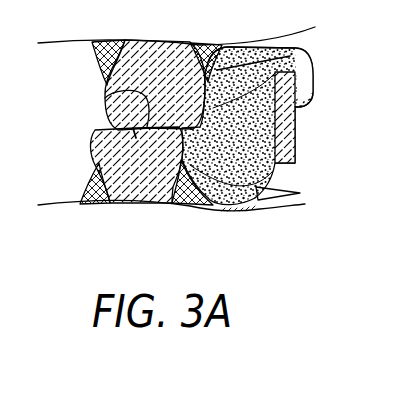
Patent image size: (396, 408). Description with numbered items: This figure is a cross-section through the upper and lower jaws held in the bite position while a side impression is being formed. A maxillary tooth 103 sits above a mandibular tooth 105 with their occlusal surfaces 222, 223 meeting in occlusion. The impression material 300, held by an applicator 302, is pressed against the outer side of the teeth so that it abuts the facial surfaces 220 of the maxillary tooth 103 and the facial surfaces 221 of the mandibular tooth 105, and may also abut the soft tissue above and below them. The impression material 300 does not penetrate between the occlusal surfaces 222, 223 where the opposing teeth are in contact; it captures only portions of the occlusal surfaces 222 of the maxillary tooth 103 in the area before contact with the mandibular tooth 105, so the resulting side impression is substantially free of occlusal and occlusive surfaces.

The maxillary tooth 103 is at (100, 66).
The mandibular tooth 105 is at (92, 182).
The facial surfaces 220 is at (300, 59).
The facial surfaces 221 is at (298, 193).
The occlusal surfaces 222 is at (103, 155).
The occlusal surfaces 223 is at (102, 106).
The impression material 300 is at (274, 167).
The applicator 302 is at (297, 120).